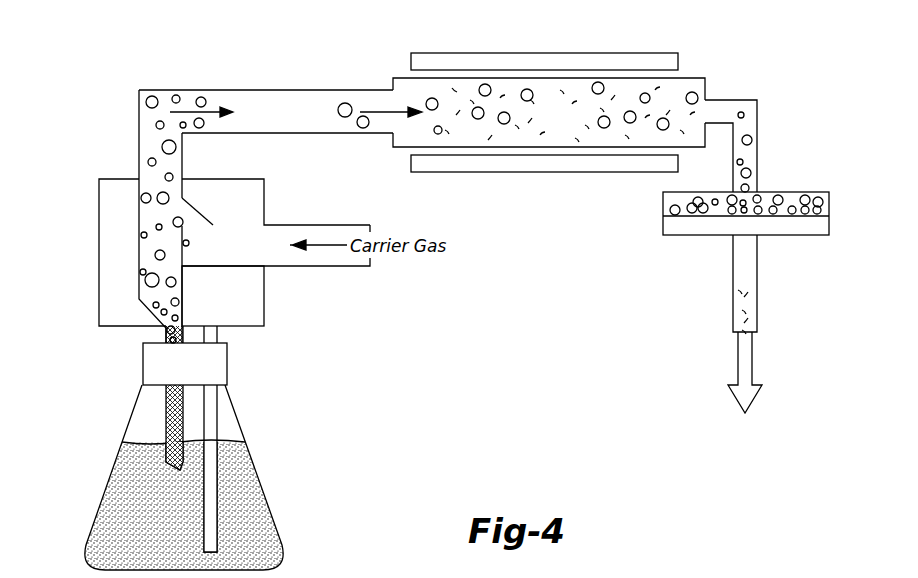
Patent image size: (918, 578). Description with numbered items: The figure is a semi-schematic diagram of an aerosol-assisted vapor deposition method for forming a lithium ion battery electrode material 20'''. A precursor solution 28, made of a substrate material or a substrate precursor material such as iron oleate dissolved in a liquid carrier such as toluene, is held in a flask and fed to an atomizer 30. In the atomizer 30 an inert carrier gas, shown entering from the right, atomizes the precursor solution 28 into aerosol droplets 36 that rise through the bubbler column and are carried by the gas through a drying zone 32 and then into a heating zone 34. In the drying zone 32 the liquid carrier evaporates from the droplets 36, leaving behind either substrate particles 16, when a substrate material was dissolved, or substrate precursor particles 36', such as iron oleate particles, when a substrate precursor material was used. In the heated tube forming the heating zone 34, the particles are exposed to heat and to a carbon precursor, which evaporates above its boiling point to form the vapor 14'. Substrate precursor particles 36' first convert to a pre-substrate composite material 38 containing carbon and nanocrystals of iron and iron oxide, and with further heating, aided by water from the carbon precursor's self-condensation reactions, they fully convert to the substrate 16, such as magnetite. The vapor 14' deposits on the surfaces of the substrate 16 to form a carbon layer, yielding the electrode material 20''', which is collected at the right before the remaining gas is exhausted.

The vapor 14' is at (549, 91).
The substrate particles 16 is at (645, 93).
The electrode material 20''' is at (753, 273).
The precursor solution 28 is at (118, 508).
The atomizer 30 is at (239, 306).
The drying zone 32 is at (292, 123).
The heating zone 34 is at (578, 123).
The aerosol droplets 36 is at (126, 216).
The substrate precursor particles 36' is at (366, 154).
The pre-substrate composite material 38 is at (441, 133).